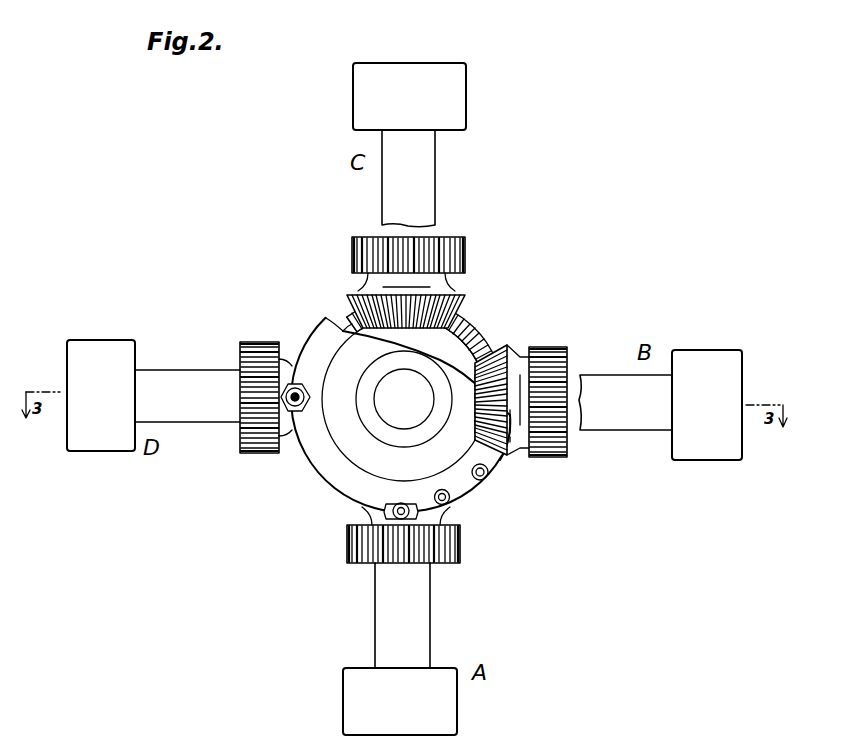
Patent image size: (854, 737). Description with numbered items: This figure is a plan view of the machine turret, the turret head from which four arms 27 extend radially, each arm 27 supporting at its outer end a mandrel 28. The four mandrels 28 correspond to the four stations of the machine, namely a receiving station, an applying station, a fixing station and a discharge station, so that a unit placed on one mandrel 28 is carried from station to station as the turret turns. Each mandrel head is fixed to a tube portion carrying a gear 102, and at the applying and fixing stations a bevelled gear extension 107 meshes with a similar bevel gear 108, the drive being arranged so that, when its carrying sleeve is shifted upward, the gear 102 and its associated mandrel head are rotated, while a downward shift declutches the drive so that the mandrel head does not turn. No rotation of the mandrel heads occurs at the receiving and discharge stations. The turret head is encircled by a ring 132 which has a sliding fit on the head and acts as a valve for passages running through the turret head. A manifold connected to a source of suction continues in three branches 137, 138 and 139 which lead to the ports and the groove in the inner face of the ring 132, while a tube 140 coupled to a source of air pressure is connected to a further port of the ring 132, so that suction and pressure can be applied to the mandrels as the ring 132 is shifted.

The arm 27 is at (432, 196).
The mandrel 28 is at (465, 105).
The gear 102 is at (466, 255).
The bevelled gear extension 107 is at (470, 328).
The bevel gear 108 is at (465, 300).
The ring 132 is at (467, 486).
The manifold branch 137 is at (489, 475).
The manifold branch 138 is at (441, 491).
The manifold branch 139 is at (402, 506).
The tube 140 is at (304, 394).